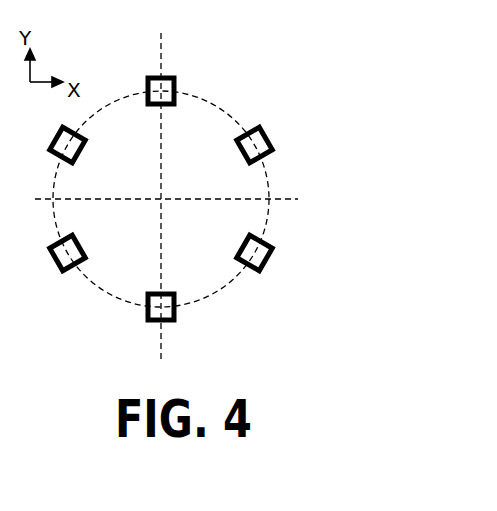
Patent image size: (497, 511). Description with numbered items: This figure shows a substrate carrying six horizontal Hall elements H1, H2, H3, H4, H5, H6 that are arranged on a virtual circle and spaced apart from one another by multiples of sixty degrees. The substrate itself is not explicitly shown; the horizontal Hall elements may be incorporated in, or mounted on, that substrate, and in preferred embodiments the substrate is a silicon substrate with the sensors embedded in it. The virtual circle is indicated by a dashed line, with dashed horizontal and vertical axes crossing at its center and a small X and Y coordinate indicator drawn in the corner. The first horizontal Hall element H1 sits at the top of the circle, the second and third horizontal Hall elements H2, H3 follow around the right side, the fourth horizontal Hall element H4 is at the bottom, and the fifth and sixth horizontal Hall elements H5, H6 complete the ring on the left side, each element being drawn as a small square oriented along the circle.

The horizontal Hall element H1 is at (175, 79).
The horizontal Hall element H2 is at (275, 145).
The horizontal Hall element H3 is at (273, 261).
The horizontal Hall element H4 is at (175, 325).
The horizontal Hall element H5 is at (51, 260).
The horizontal Hall element H6 is at (51, 142).